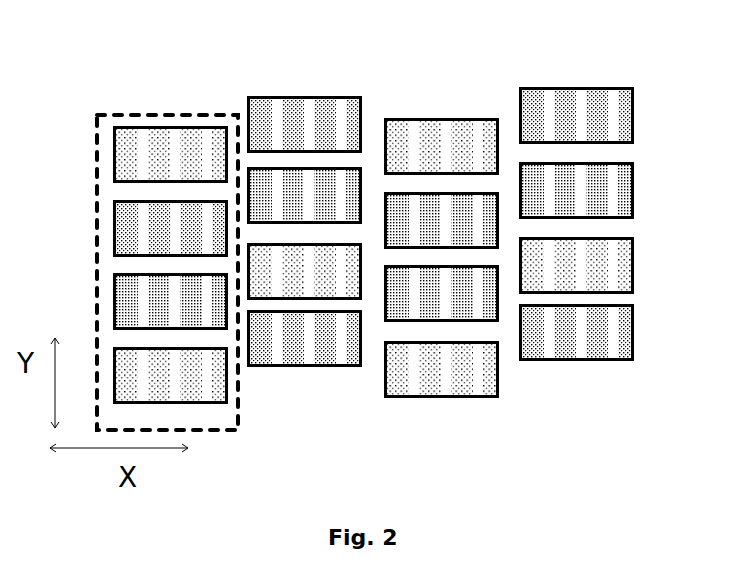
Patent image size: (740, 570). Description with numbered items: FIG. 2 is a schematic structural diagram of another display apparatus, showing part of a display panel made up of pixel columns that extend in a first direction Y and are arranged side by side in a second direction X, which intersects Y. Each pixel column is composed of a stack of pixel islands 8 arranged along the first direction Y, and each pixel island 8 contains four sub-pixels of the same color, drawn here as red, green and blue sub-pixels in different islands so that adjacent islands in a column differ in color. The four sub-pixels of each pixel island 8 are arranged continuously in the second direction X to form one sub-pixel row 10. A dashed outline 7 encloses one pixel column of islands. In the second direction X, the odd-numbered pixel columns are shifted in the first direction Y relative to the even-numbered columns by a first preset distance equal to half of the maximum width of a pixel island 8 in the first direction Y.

The pixel 7 is at (190, 117).
The pixel island 8 is at (147, 126).
The sub-pixel row 10 is at (638, 87).